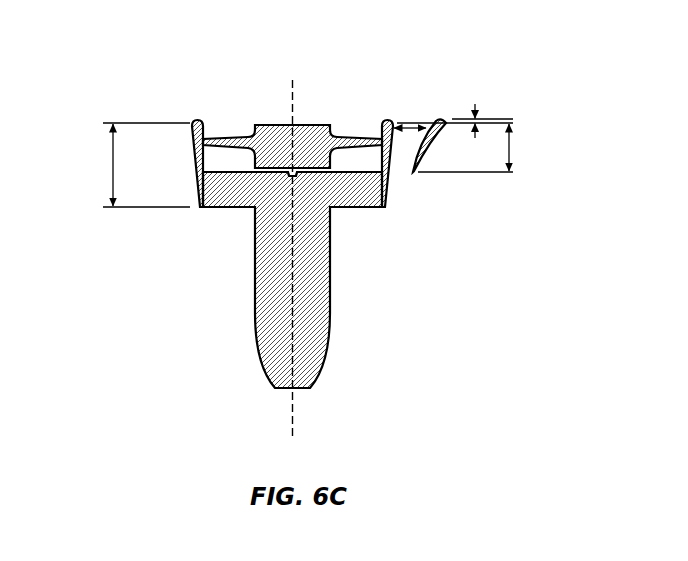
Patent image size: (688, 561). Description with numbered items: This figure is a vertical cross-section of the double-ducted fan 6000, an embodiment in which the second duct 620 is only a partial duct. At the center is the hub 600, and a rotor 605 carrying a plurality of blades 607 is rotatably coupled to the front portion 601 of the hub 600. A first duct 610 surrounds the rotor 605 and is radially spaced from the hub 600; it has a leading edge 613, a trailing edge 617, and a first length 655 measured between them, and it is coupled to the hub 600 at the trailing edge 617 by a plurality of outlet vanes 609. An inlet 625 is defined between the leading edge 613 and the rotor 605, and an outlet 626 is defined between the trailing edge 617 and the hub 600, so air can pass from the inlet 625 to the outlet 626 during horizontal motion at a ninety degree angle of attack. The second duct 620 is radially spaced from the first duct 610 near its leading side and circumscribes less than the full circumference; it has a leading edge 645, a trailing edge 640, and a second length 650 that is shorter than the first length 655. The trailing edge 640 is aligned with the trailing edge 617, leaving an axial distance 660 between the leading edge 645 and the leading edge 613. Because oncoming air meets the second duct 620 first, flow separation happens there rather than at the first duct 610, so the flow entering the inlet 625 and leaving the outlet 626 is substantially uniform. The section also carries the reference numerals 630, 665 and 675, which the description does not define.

The hub 600 is at (313, 250).
The double-ducted fan 6000 is at (198, 310).
The front portion 601 is at (280, 180).
The rotor 605 is at (309, 137).
The blades 607 is at (348, 134).
The outlet vanes 609 is at (212, 208).
The first duct 610 is at (192, 148).
The leading edge 613 is at (193, 121).
The trailing edge 617 is at (200, 208).
The second duct 620 is at (433, 137).
The inlet 625 is at (228, 119).
The outlet 626 is at (223, 213).
The gap 630 is at (401, 168).
The trailing edge 640 is at (418, 173).
The leading edge 645 is at (440, 124).
The second length 650 is at (511, 146).
The first length 655 is at (112, 165).
The axial distance 660 is at (477, 104).
The central axis 665 is at (293, 410).
The gap width 675 is at (410, 126).